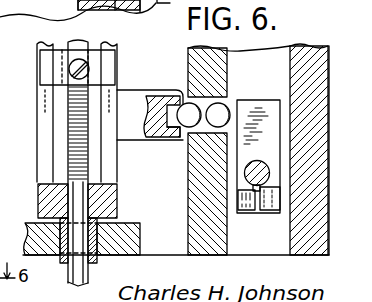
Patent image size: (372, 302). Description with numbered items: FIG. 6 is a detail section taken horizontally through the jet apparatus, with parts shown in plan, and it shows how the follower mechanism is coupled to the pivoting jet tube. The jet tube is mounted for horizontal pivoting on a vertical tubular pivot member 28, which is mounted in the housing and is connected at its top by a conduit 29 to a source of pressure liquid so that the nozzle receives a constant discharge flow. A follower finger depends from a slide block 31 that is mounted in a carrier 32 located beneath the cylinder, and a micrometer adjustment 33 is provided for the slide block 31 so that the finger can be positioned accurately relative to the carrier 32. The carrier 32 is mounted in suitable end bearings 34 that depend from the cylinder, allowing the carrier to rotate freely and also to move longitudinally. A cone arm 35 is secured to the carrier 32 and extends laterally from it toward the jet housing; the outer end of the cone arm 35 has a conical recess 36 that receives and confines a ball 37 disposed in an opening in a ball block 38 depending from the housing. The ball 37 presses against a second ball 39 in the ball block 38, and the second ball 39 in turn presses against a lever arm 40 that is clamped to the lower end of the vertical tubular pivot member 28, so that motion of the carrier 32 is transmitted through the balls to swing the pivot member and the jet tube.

The vertical tubular pivot member 28 is at (269, 172).
The conduit 29 is at (0, 31).
The slide block 31 is at (94, 68).
The carrier 32 is at (42, 115).
The micrometer adjustment 33 is at (82, 173).
The end bearings 34 is at (60, 255).
The cone arm 35 is at (140, 131).
The conical recess 36 is at (180, 102).
The ball 37 is at (182, 136).
The ball block 38 is at (190, 188).
The second ball 39 is at (228, 105).
The lever arm 40 is at (273, 113).